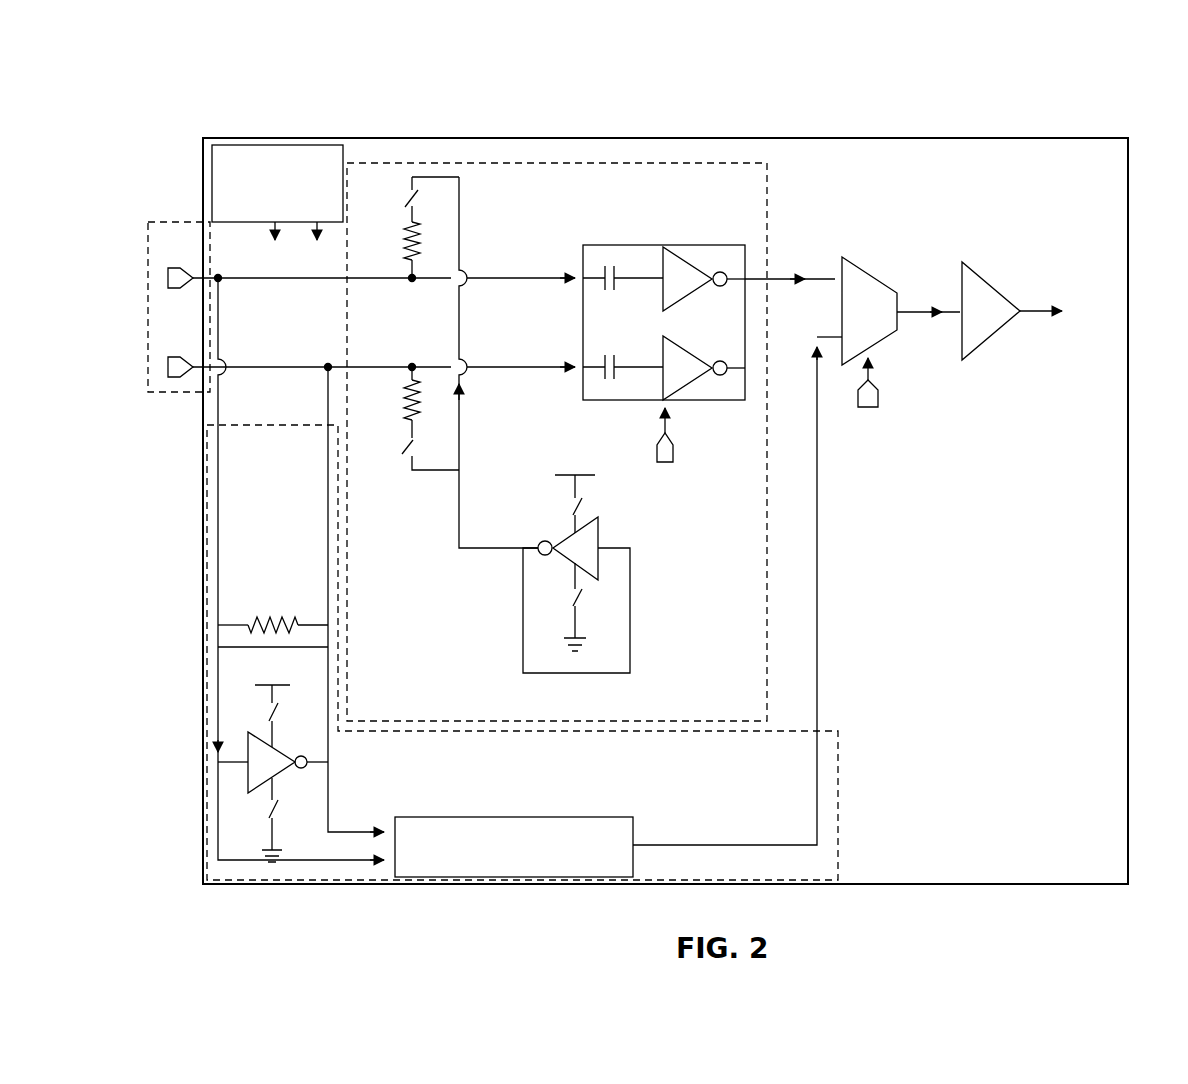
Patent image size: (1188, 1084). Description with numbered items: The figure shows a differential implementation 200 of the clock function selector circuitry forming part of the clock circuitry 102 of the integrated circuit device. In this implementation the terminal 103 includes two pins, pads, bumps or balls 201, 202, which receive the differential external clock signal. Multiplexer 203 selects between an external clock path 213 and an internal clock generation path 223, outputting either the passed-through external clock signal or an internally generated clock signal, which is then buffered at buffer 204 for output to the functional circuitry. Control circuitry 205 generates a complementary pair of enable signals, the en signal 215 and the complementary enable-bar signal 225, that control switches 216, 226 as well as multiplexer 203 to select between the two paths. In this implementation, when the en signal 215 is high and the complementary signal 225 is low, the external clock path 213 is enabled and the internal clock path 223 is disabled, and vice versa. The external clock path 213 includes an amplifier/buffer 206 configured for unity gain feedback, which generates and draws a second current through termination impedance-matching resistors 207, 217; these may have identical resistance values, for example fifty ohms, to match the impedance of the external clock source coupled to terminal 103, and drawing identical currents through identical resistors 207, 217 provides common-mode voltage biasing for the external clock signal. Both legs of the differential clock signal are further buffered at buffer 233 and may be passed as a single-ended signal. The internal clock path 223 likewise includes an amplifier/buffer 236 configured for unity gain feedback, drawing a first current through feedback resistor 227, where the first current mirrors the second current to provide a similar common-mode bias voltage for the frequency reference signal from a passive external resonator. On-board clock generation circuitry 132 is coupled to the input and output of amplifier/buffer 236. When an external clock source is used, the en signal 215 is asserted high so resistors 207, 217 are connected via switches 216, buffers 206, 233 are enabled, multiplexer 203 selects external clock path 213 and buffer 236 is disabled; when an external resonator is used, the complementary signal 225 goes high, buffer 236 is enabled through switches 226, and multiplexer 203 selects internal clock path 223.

The implementation 200 is at (136, 78).
The clock circuitry 102 is at (270, 137).
The control circuitry 205 is at (350, 163).
The terminal 103 is at (182, 222).
The pin 201 is at (173, 290).
The pin 202 is at (173, 357).
The en signal 215 is at (275, 224).
The enb signal 225 is at (319, 224).
The switches 216 is at (416, 196).
The termination impedance-matching resistor 207 is at (416, 243).
The termination impedance-matching resistor 217 is at (408, 393).
The buffer 233 is at (656, 245).
The multiplexer 203 is at (872, 277).
The buffer 204 is at (982, 277).
The amplifier/buffer 206 is at (600, 546).
The feedback resistor 227 is at (258, 625).
The amplifier/buffer 236 is at (247, 752).
The switches 226 is at (276, 718).
The on-board clock generation circuitry 132 is at (460, 817).
The external clock path 213 is at (768, 192).
The internal clock path 223 is at (840, 748).